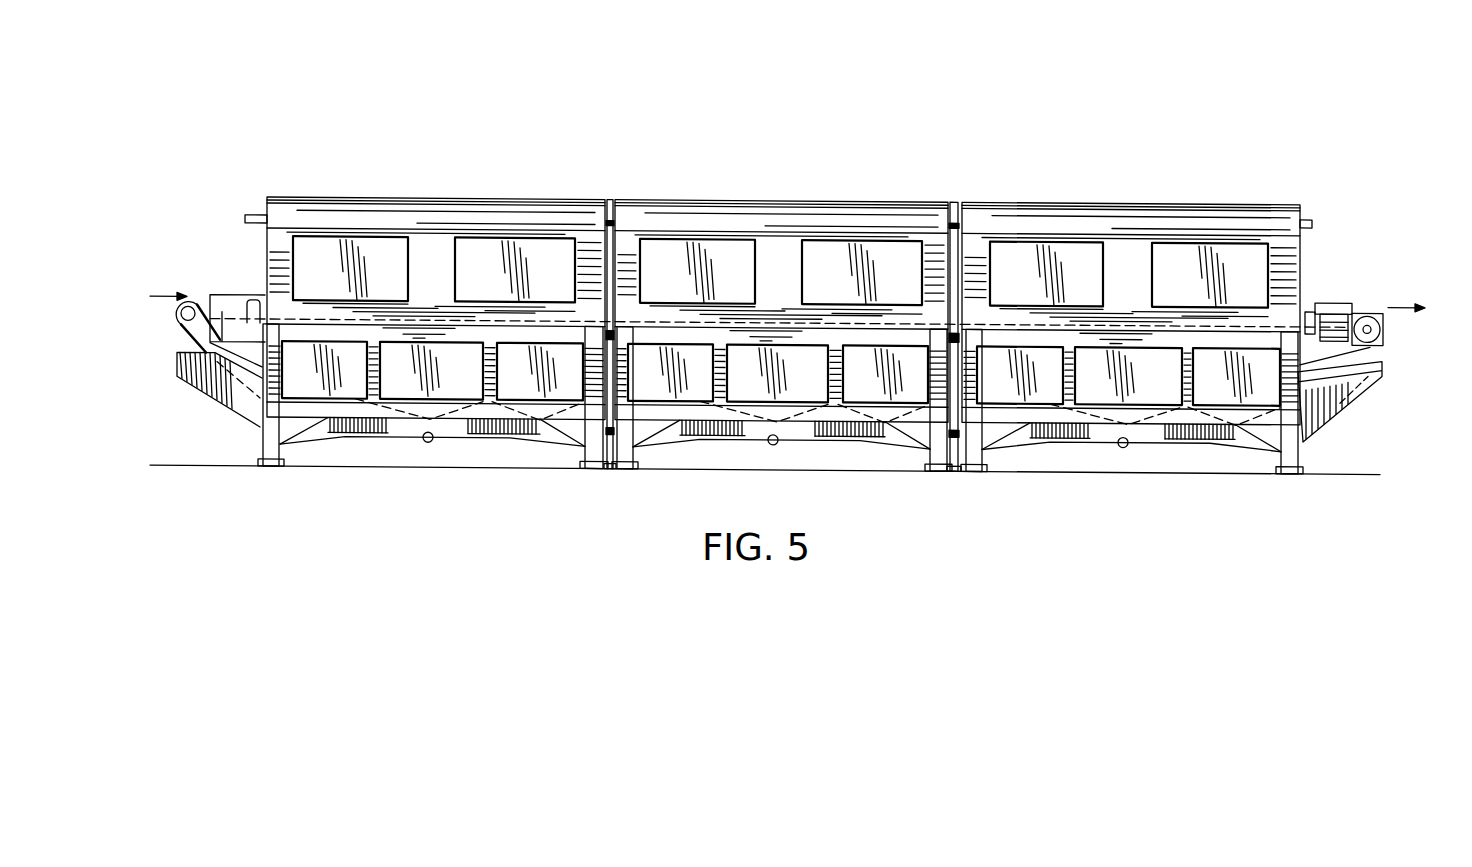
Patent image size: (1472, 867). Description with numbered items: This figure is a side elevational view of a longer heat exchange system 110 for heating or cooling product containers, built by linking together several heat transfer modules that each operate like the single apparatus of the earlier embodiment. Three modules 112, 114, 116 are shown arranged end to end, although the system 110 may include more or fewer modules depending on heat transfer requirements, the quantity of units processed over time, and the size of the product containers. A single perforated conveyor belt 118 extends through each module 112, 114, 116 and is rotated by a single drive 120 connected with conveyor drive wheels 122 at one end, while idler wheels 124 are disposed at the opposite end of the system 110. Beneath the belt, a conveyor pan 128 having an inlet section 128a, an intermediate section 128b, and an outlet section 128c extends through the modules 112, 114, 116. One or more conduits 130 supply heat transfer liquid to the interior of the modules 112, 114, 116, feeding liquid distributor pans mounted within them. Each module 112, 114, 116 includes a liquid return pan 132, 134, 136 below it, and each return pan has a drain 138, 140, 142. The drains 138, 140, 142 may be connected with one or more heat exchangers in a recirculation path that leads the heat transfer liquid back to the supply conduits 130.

The system 110 is at (904, 93).
The module 112 is at (433, 195).
The module 114 is at (733, 192).
The module 116 is at (1073, 190).
The perforated conveyor belt 118 is at (183, 329).
The drive 120 is at (1368, 296).
The conveyor drive wheels 122 is at (1383, 320).
The idler wheels 124 is at (181, 315).
The conveyor pan 128 is at (256, 298).
The inlet section 128a is at (215, 294).
The intermediate section 128b is at (1312, 293).
The outlet section 128c is at (1325, 295).
The conduits 130 is at (254, 213).
The liquid return pan 132 is at (365, 446).
The liquid return pan 134 is at (688, 442).
The liquid return pan 136 is at (1062, 439).
The drain 138 is at (428, 442).
The drain 140 is at (776, 443).
The drain 142 is at (1125, 440).